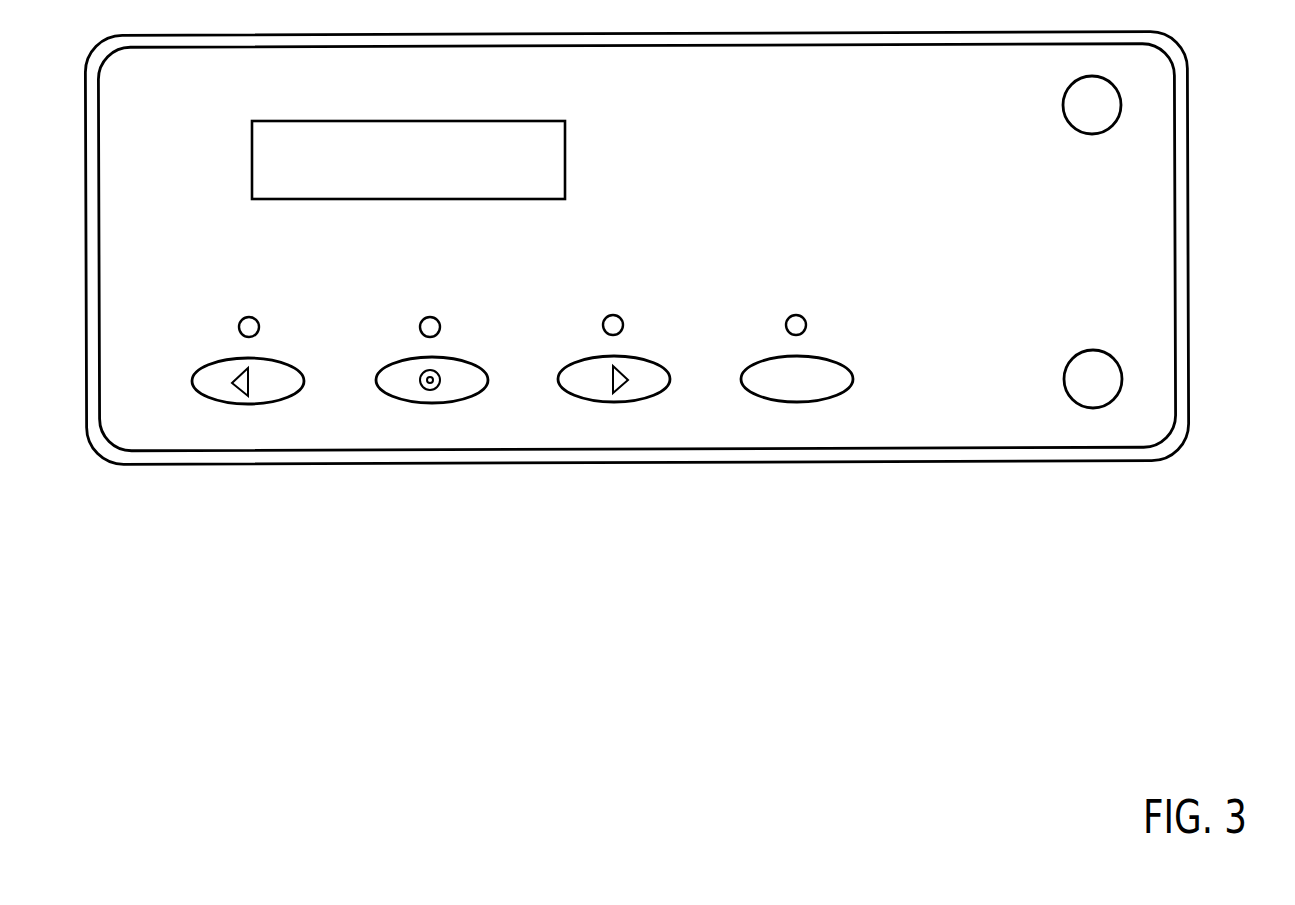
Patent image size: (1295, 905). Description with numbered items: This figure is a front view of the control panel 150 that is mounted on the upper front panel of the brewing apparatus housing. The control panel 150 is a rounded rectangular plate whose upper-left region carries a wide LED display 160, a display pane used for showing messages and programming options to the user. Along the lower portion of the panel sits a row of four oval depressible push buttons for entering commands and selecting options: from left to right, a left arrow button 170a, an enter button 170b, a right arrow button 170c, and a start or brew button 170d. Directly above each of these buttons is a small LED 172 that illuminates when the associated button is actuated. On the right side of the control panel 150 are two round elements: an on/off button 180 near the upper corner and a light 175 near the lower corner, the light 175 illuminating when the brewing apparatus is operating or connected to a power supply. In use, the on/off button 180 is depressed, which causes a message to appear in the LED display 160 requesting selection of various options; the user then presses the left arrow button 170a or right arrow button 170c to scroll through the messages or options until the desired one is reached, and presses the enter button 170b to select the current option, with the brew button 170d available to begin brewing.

The control panel 150 is at (1190, 172).
The LED display 160 is at (565, 168).
The left arrow button 170a is at (272, 403).
The enter button 170b is at (462, 402).
The right arrow button 170c is at (634, 401).
The start or brew button 170d is at (822, 401).
The LED 172 is at (256, 320).
The light 175 is at (1068, 365).
The on/off button 180 is at (1067, 91).